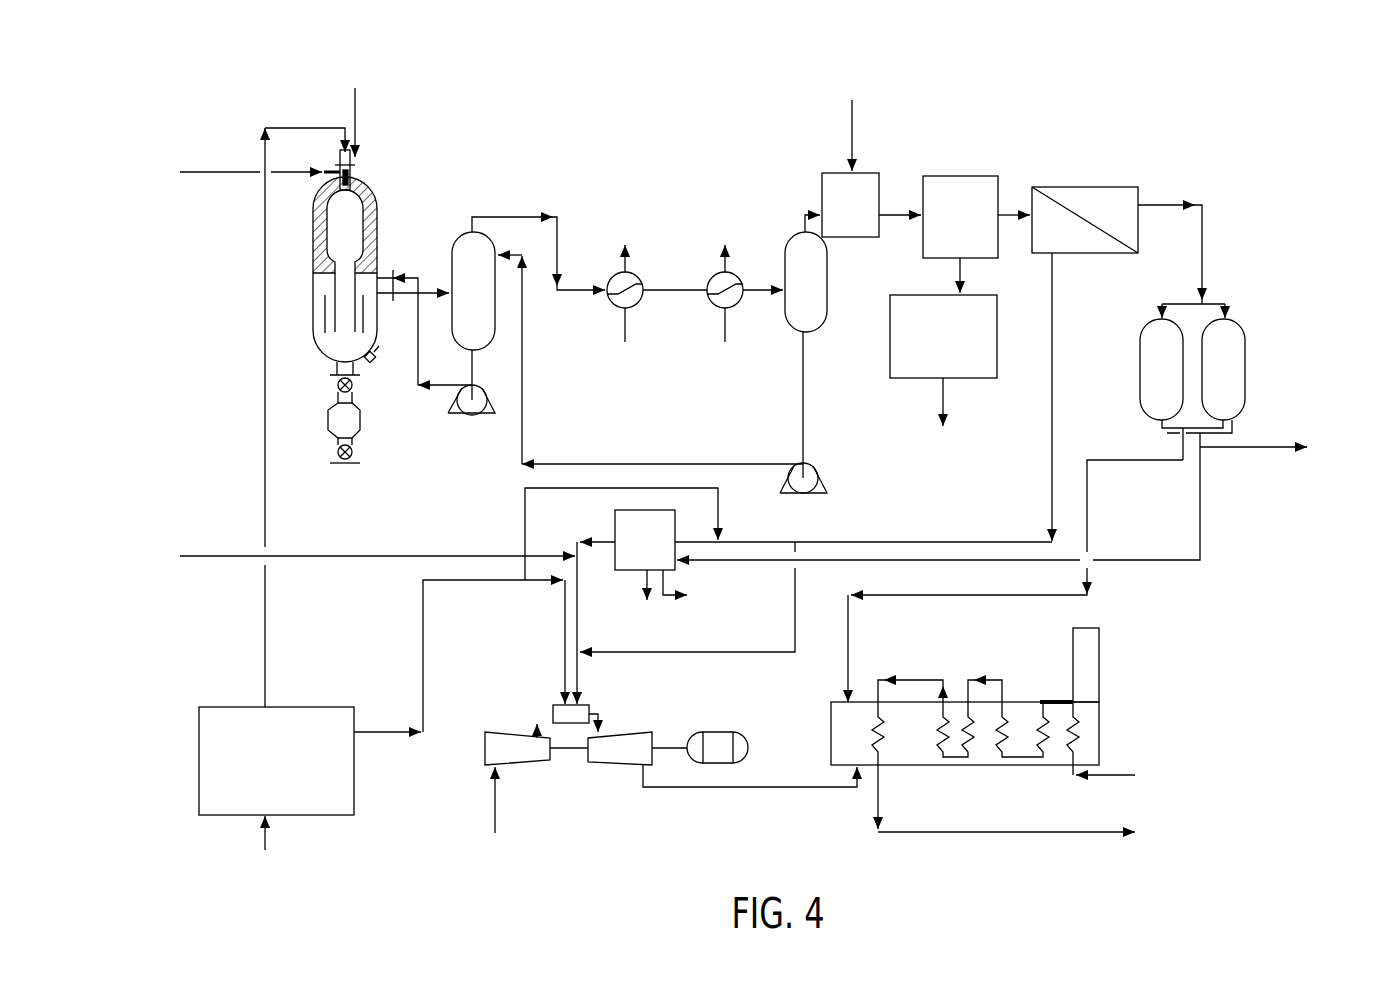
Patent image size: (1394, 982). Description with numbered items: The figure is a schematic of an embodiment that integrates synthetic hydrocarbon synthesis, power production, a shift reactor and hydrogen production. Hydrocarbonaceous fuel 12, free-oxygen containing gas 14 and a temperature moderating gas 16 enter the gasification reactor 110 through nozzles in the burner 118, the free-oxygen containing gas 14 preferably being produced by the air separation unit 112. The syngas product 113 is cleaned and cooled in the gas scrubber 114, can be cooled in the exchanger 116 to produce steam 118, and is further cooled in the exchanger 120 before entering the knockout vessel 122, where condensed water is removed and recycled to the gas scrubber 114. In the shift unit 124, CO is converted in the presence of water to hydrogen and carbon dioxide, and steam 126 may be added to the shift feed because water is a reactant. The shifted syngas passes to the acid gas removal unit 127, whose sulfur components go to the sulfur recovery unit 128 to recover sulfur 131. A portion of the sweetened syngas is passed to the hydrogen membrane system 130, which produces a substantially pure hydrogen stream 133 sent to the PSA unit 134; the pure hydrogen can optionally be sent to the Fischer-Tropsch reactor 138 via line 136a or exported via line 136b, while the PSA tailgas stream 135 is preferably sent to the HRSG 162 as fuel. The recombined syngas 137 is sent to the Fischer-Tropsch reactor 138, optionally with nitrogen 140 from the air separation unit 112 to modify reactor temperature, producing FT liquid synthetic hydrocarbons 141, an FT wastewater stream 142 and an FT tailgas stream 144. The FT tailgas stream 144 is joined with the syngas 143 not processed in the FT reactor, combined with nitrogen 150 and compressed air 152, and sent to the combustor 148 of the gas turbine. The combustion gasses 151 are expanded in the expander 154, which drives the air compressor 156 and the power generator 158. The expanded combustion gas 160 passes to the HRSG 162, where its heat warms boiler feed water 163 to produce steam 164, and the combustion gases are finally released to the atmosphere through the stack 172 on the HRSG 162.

The hydrocarbonaceous fuel 12 is at (245, 172).
The free-oxygen containing gas 14 is at (305, 404).
The temperature moderating gas 16 is at (353, 109).
The gasification reactor 110 is at (390, 211).
The air separation unit 112 is at (257, 777).
The syngas product 113 is at (412, 295).
The gas scrubber 114 is at (455, 302).
The exchanger 116 is at (640, 271).
The burner 118 is at (353, 172).
The exchanger 120 is at (740, 271).
The knockout vessel 122 is at (787, 295).
The shift unit 124 is at (832, 217).
The steam 126 is at (852, 124).
The acid gas removal unit 127 is at (942, 227).
The sulfur recovery unit 128 is at (925, 352).
The hydrogen membrane system 130 is at (1082, 217).
The sulfur 131 is at (943, 418).
The substantially pure hydrogen stream 133 is at (1170, 236).
The PSA unit 134 is at (1254, 338).
The PSA tailgas stream 135 is at (1015, 567).
The line 136a is at (974, 511).
The line 136b is at (1287, 447).
The syngas 137 is at (863, 528).
The Fischer-Tropsch reactor 138 is at (627, 552).
The nitrogen 140 is at (621, 521).
The FT liquid synthetic hydrocarbons 141 is at (647, 600).
The FT wastewater stream 142 is at (694, 590).
The syngas 143 is at (687, 599).
The FT tailgas stream 144 is at (594, 607).
The combustor 148 is at (583, 705).
The nitrogen 150 is at (459, 656).
The combustion gasses 151 is at (612, 714).
The compressed air 152 is at (518, 717).
The expander 154 is at (610, 760).
The air compressor 156 is at (486, 760).
The power generator 158 is at (711, 740).
The expanded combustion gas 160 is at (750, 777).
The HRSG 162 is at (1125, 734).
The boiler feed water 163 is at (1125, 778).
The steam 164 is at (1026, 805).
The stack 172 is at (1103, 692).